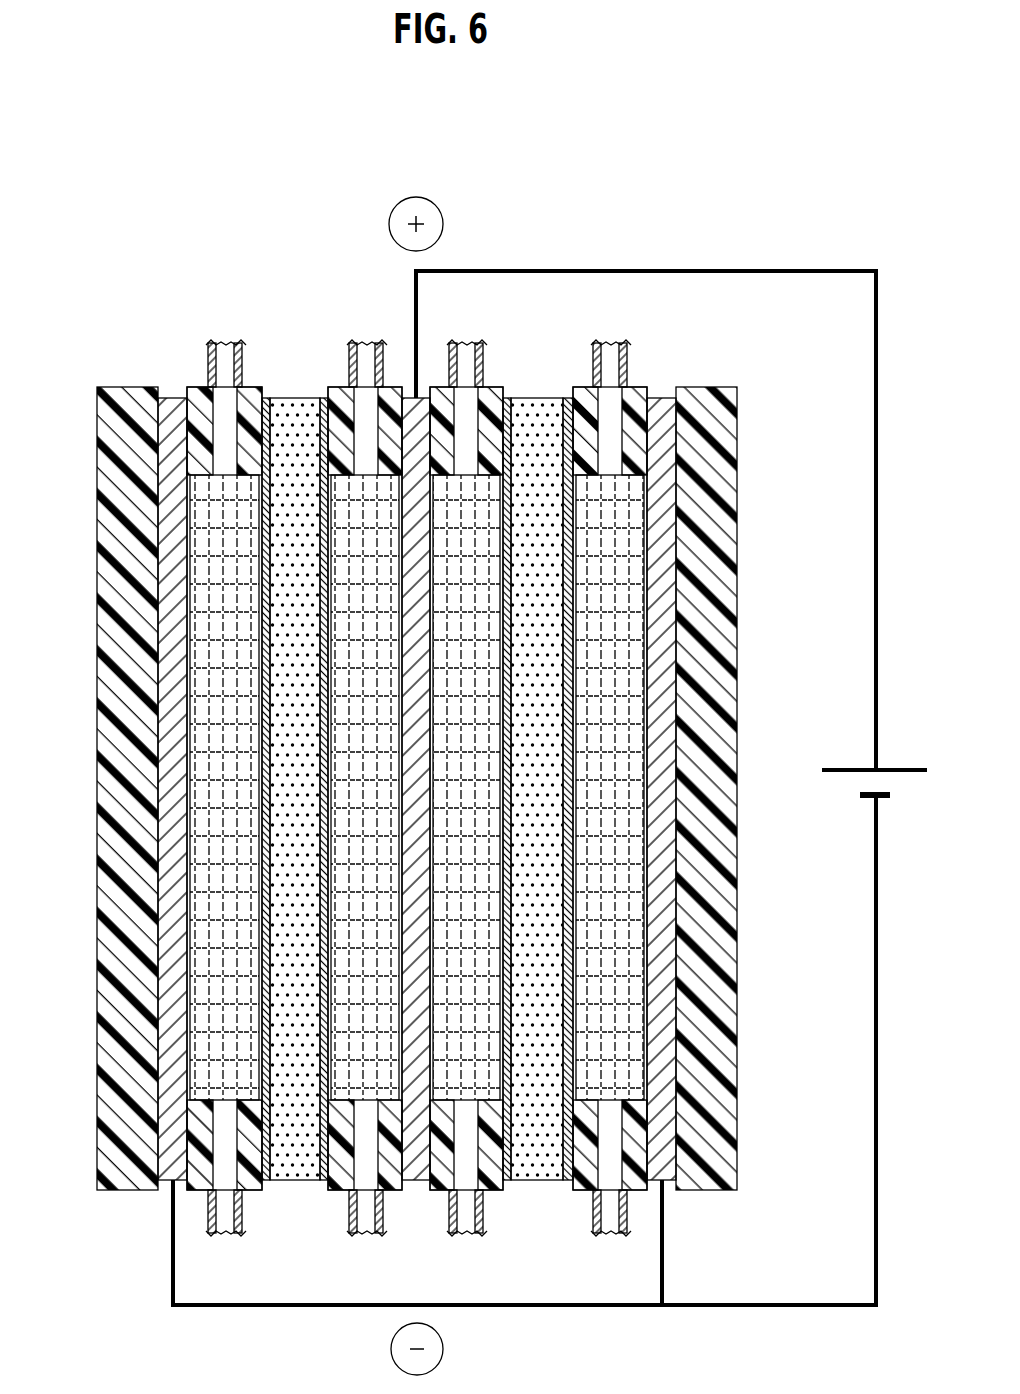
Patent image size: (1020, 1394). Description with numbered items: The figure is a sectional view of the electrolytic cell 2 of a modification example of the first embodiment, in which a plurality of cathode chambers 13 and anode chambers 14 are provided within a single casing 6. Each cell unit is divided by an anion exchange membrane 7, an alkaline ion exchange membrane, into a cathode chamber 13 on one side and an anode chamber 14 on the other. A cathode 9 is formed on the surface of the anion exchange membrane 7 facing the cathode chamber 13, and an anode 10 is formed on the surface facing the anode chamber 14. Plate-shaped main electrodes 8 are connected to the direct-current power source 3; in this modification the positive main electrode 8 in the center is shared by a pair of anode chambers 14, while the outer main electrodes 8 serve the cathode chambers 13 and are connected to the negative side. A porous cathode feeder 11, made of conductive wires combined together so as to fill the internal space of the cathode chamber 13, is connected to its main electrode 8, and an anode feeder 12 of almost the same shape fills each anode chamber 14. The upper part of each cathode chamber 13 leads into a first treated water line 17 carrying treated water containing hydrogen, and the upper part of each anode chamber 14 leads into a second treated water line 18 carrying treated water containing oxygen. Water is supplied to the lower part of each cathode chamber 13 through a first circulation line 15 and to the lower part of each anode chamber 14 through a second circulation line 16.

The electrolytic cell 2 is at (108, 305).
The direct-current power source 3 is at (890, 768).
The casing 6 is at (745, 440).
The anion exchange membrane 7 is at (292, 393).
The main electrode 8 is at (180, 1120).
The cathode 9 is at (258, 535).
The anode 10 is at (323, 898).
The cathode feeder 11 is at (210, 710).
The anode feeder 12 is at (347, 960).
The cathode chamber 13 is at (215, 628).
The anode chamber 14 is at (372, 1013).
The first circulation line 15 is at (208, 1210).
The second circulation line 16 is at (350, 1210).
The first treated water line 17 is at (205, 368).
The second treated water line 18 is at (350, 366).